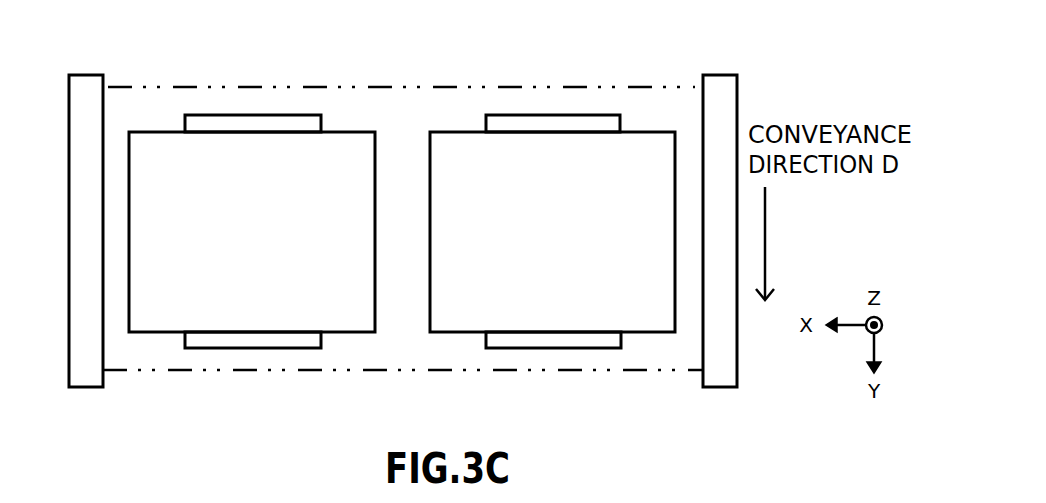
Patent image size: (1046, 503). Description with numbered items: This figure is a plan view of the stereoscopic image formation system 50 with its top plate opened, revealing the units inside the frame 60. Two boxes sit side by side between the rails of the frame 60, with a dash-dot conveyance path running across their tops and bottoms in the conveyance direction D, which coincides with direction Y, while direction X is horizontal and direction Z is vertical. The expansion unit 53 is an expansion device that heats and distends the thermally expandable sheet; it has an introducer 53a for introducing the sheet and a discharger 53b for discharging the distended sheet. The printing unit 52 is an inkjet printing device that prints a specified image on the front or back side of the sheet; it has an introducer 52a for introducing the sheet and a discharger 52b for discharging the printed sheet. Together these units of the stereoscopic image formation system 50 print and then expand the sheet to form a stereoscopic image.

The stereoscopic image formation system 50 is at (770, 49).
The printing unit 52 is at (458, 131).
The introducer 52a is at (525, 114).
The discharger 52b is at (525, 349).
The expansion unit 53 is at (155, 131).
The introducer 53a is at (224, 114).
The discharger 53b is at (222, 349).
The frame 60 is at (738, 95).